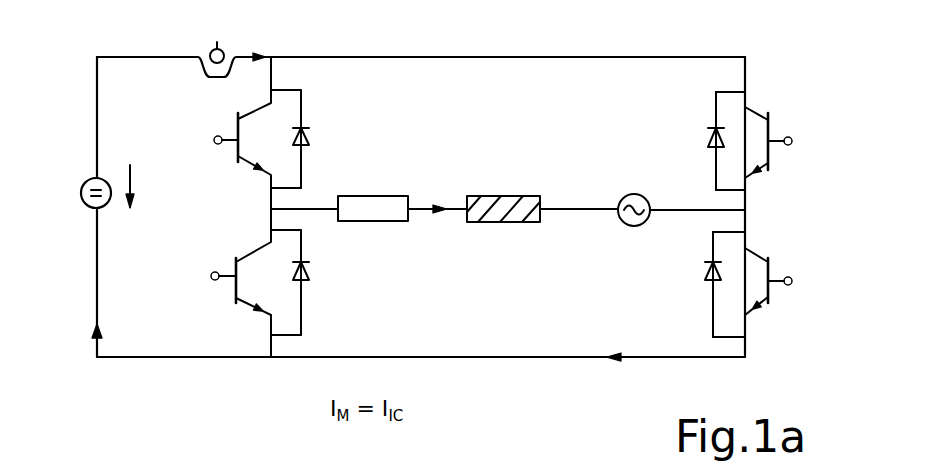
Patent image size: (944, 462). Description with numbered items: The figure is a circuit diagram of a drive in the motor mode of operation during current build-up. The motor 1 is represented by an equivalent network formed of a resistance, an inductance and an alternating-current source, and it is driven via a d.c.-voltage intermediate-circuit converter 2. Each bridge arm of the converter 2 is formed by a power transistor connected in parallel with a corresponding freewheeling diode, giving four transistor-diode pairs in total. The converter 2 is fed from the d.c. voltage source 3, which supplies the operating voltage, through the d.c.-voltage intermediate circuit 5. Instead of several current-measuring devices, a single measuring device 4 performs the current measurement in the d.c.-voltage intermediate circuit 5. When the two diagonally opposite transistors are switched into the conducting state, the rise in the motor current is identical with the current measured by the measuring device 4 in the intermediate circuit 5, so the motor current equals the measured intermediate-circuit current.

The motor 1 is at (453, 212).
The d.c.-voltage intermediate-circuit converter 2 is at (493, 60).
The d.c. voltage source 3 is at (87, 206).
The current-measuring device 4 is at (226, 51).
The d.c.-voltage intermediate circuit 5 is at (104, 100).